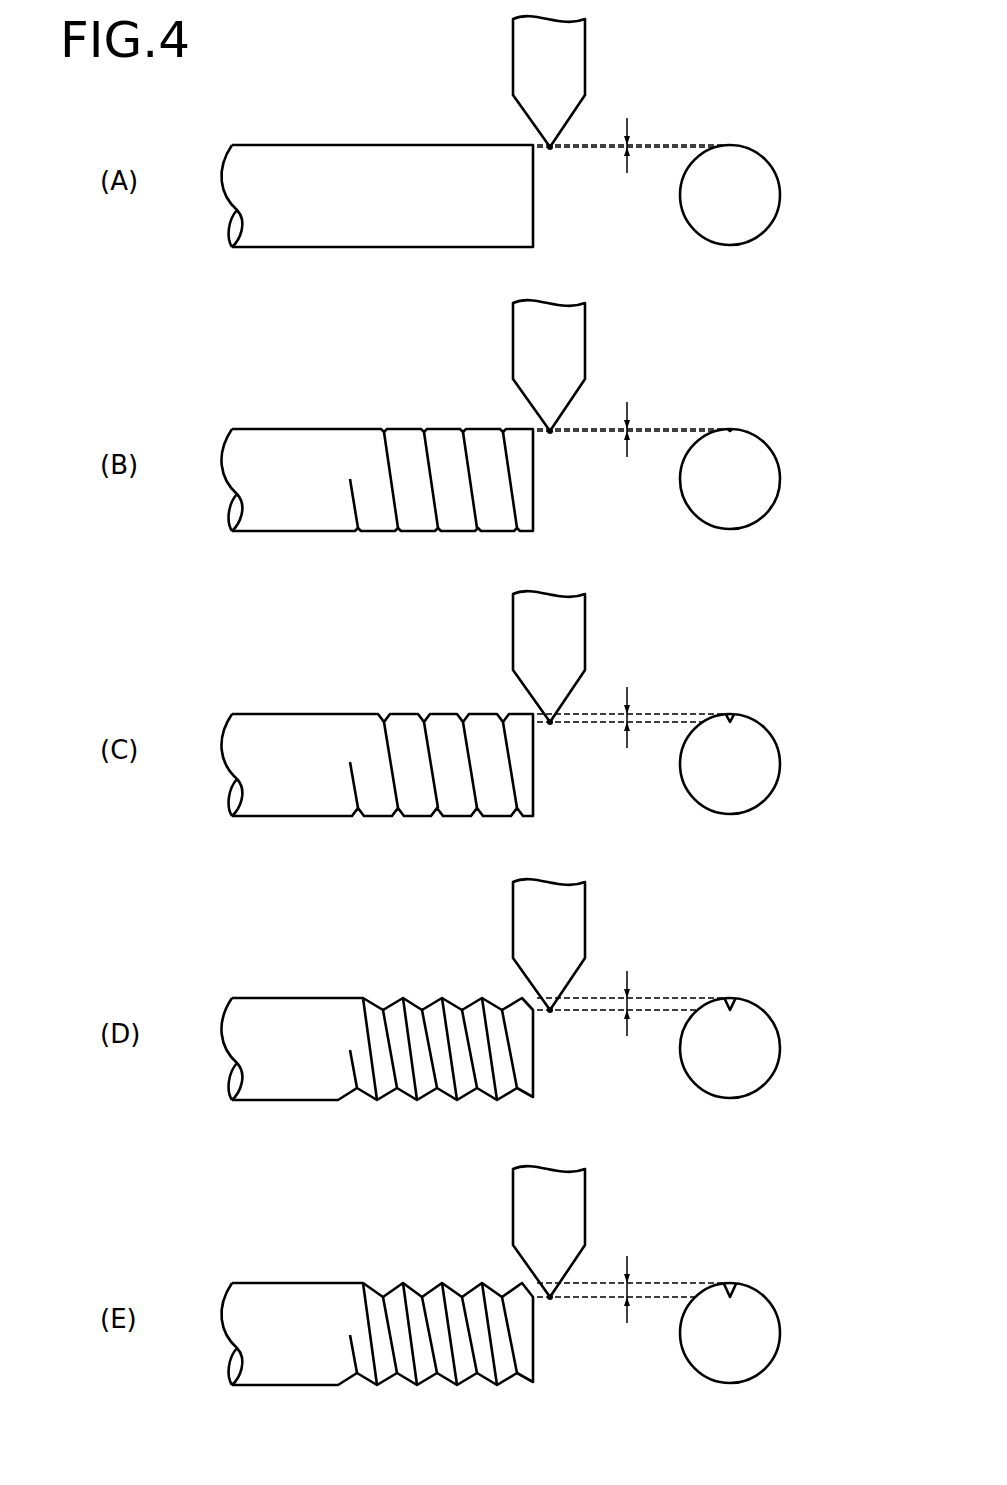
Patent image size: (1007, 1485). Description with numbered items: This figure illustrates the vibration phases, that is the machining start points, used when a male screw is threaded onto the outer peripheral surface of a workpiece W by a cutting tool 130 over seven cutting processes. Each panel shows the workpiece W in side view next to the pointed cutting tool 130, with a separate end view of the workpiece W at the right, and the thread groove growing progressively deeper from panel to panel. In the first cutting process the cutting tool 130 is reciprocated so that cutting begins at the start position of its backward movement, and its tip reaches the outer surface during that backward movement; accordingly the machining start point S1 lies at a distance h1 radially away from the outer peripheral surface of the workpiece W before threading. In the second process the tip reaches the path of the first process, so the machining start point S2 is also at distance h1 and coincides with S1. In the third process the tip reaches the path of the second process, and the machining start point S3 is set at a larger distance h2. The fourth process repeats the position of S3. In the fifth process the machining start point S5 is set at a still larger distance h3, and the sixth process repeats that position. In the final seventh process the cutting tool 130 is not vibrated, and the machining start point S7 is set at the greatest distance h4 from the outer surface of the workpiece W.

The cutting tool 130 is at (568, 52).
The workpiece W is at (355, 160).
The machining start point S1 is at (550, 147).
The machining start point S2 is at (550, 431).
The machining start point S3 is at (550, 722).
The machining start point S5 is at (550, 1010).
The machining start point S7 is at (550, 1297).
The distance h1 is at (632, 282).
The distance h2 is at (632, 712).
The distance h3 is at (632, 998).
The distance h4 is at (632, 1284).